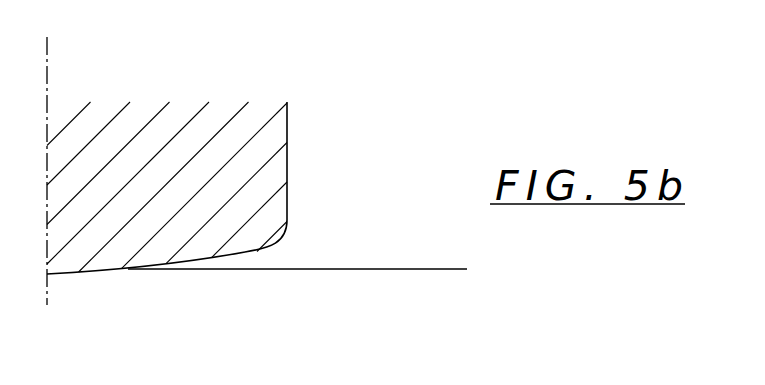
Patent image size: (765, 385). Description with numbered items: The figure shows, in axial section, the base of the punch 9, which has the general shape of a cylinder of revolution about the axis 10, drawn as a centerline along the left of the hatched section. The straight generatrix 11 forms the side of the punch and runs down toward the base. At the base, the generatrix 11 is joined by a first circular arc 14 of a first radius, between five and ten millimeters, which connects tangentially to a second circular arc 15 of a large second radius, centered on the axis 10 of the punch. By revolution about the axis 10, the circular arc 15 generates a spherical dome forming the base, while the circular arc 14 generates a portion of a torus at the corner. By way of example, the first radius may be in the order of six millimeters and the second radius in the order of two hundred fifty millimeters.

The punch 9 is at (209, 140).
The axis 10 is at (47, 100).
The generatrix 11 is at (288, 177).
The first circular arc 14 is at (280, 238).
The second circular arc 15 is at (155, 268).